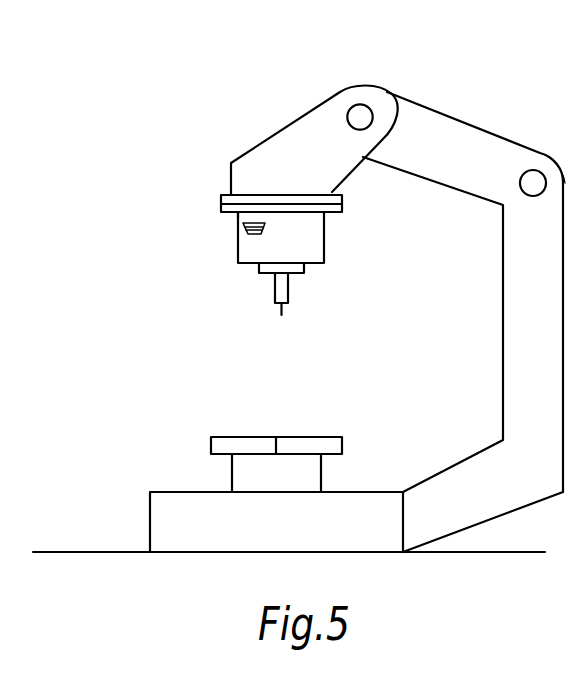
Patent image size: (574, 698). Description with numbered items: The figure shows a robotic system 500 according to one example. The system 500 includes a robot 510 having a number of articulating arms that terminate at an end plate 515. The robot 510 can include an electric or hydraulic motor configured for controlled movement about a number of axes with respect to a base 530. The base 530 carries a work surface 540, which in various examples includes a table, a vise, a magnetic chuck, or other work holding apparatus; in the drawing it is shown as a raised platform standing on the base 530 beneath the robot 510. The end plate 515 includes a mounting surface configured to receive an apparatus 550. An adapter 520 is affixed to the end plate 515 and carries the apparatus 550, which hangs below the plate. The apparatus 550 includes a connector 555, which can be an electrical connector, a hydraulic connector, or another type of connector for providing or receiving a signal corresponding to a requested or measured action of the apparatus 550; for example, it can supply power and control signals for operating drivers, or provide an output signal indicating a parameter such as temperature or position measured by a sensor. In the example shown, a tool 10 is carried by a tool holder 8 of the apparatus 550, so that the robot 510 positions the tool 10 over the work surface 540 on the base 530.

The system 500 is at (90, 17).
The robot 510 is at (285, 132).
The end plate 515 is at (221, 195).
The adapter 520 is at (229, 213).
The apparatus 550 is at (325, 238).
The connector 555 is at (250, 234).
The tool 10 is at (275, 296).
The tool holder 8 is at (299, 275).
The work surface 540 is at (240, 437).
The base 530 is at (175, 492).